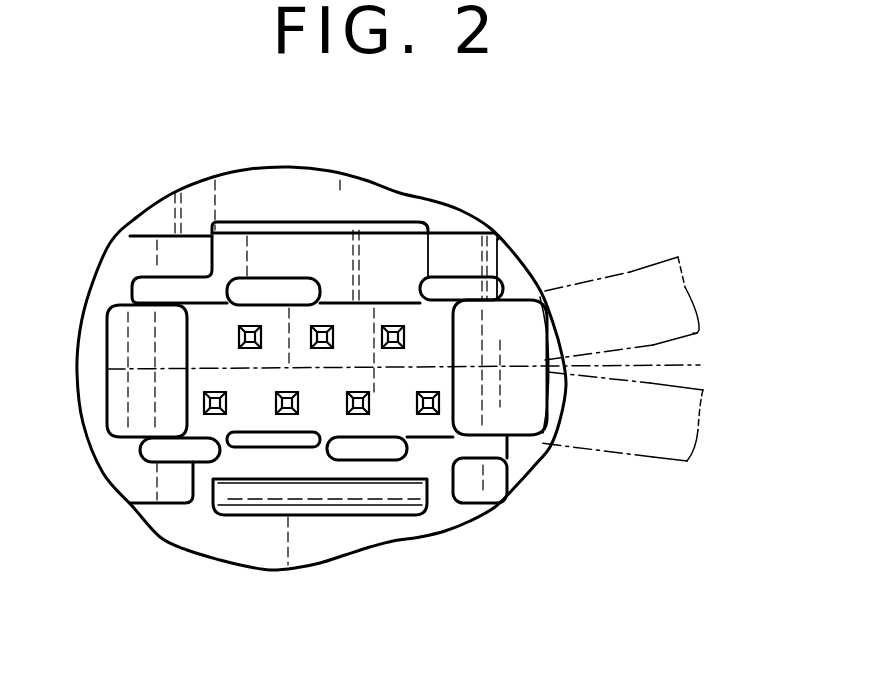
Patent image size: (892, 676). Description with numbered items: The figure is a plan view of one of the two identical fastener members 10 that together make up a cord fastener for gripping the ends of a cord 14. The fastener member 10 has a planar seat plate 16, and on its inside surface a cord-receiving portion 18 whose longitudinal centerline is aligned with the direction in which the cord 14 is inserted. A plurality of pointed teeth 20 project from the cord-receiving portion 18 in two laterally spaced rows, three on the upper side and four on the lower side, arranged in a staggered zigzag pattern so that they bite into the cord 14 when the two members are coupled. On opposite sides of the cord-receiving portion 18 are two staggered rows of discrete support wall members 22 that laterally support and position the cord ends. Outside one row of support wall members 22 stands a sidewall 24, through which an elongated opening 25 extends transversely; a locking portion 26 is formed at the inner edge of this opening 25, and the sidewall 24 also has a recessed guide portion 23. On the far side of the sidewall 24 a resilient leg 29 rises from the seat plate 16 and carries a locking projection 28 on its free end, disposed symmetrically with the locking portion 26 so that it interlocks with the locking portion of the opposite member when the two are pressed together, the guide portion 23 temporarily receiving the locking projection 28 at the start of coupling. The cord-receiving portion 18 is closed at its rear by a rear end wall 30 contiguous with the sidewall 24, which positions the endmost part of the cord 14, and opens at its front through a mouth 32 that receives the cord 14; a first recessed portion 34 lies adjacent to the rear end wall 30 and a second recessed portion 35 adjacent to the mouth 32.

The fastener member 10 is at (436, 175).
The cord 14 is at (653, 383).
The seat plate 16 is at (247, 547).
The cord-receiving portion 18 is at (232, 337).
The pointed teeth 20 is at (323, 325).
The support wall members 22 is at (243, 230).
The recessed guide portion 23 is at (277, 232).
The sidewall 24 is at (163, 212).
The opening 25 is at (428, 213).
The locking portion 26 is at (397, 236).
The locking projection 28 is at (353, 520).
The resilient leg 29 is at (230, 493).
The rear end wall 30 is at (103, 391).
The mouth 32 is at (553, 403).
The first recessed portion 34 is at (185, 361).
The second recessed portion 35 is at (523, 333).